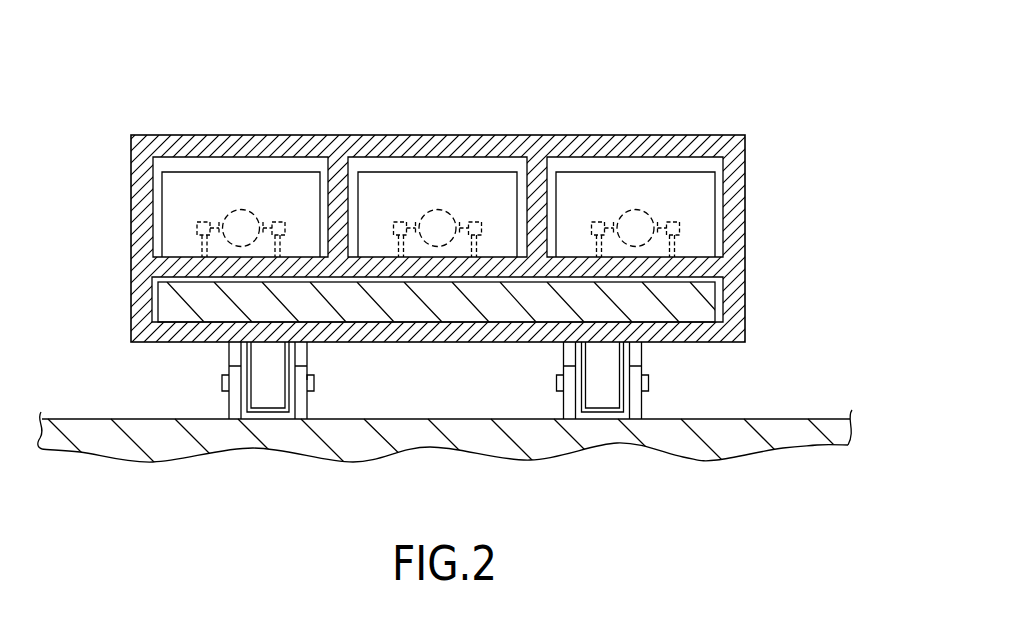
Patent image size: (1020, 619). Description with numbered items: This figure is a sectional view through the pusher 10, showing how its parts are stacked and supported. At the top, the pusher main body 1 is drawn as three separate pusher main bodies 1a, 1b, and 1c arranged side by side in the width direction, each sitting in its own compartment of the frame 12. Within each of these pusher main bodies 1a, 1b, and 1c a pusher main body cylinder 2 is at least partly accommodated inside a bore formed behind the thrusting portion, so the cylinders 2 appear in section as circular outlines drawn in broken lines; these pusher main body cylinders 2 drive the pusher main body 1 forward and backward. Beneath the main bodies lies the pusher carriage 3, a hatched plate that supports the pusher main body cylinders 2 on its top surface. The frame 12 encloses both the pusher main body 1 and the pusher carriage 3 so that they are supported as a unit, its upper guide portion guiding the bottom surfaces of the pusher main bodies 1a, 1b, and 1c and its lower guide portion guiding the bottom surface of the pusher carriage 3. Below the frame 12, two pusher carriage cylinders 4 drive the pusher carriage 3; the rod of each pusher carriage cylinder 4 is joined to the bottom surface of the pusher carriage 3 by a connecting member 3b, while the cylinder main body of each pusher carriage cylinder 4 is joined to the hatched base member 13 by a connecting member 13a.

The pusher 10 is at (772, 75).
The pusher main body 1 is at (400, 118).
The pusher main body 1a is at (208, 172).
The pusher main body 1b is at (487, 170).
The pusher main body 1c is at (632, 170).
The pusher main body cylinder 2 is at (245, 202).
The frame 12 is at (732, 202).
The pusher carriage 3 is at (715, 298).
The connecting member 3b is at (307, 356).
The pusher carriage cylinder 4 is at (210, 373).
The base member 13 is at (767, 419).
The connecting member 13a is at (307, 400).